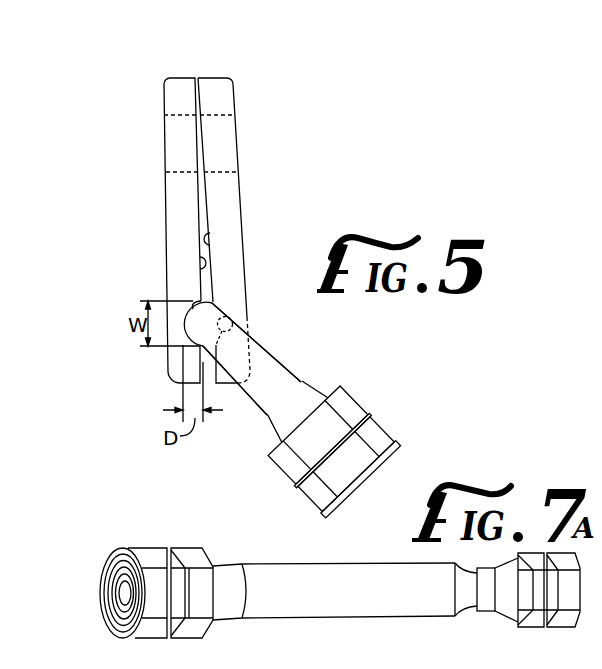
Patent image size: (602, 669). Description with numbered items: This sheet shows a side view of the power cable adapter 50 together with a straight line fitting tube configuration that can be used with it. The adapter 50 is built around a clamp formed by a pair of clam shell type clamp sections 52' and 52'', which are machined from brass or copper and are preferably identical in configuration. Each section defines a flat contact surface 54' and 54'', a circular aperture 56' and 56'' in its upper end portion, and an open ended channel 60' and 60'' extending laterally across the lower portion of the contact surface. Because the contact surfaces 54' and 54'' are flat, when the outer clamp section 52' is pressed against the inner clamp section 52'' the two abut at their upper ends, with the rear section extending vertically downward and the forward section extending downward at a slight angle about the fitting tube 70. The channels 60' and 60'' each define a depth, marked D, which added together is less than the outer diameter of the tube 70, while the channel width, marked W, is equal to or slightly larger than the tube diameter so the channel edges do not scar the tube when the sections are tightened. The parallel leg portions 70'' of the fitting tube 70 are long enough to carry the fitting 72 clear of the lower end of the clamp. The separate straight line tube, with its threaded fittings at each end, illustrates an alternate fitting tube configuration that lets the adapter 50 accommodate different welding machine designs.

The cable adapter 50 is at (241, 85).
The clamp section 52' is at (256, 230).
The clamp section 52'' is at (157, 230).
The contact surface 54' is at (255, 232).
The contact surface 54'' is at (164, 247).
The circular aperture 56' is at (254, 143).
The circular aperture 56'' is at (157, 129).
The open ended channel 60' is at (259, 307).
The open ended channel 60'' is at (162, 284).
The fitting tube 70 is at (265, 393).
The leg portions 70'' is at (264, 358).
The fitting 72 is at (350, 392).